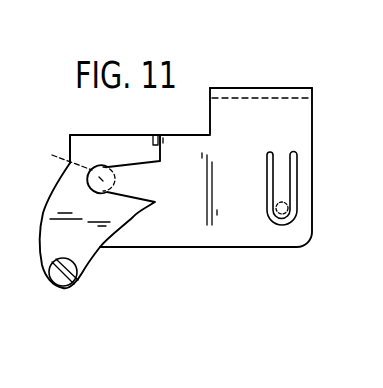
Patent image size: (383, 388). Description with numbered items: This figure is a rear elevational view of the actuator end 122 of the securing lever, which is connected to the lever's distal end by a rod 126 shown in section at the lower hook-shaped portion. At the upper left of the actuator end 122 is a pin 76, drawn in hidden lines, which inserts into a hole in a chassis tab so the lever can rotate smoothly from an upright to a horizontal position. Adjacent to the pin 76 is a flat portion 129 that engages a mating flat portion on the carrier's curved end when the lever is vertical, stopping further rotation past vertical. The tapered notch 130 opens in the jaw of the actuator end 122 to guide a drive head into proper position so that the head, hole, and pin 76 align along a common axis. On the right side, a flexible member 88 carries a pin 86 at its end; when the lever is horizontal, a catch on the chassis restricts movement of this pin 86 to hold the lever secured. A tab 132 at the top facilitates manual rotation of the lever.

The pin 76 is at (61, 156).
The pin 86 is at (287, 208).
The flexible member 88 is at (283, 183).
The actuator end 122 is at (257, 188).
The rod 126 is at (77, 278).
The flat portion 129 is at (70, 147).
The tapered notch 130 is at (114, 172).
The tab 132 is at (255, 88).